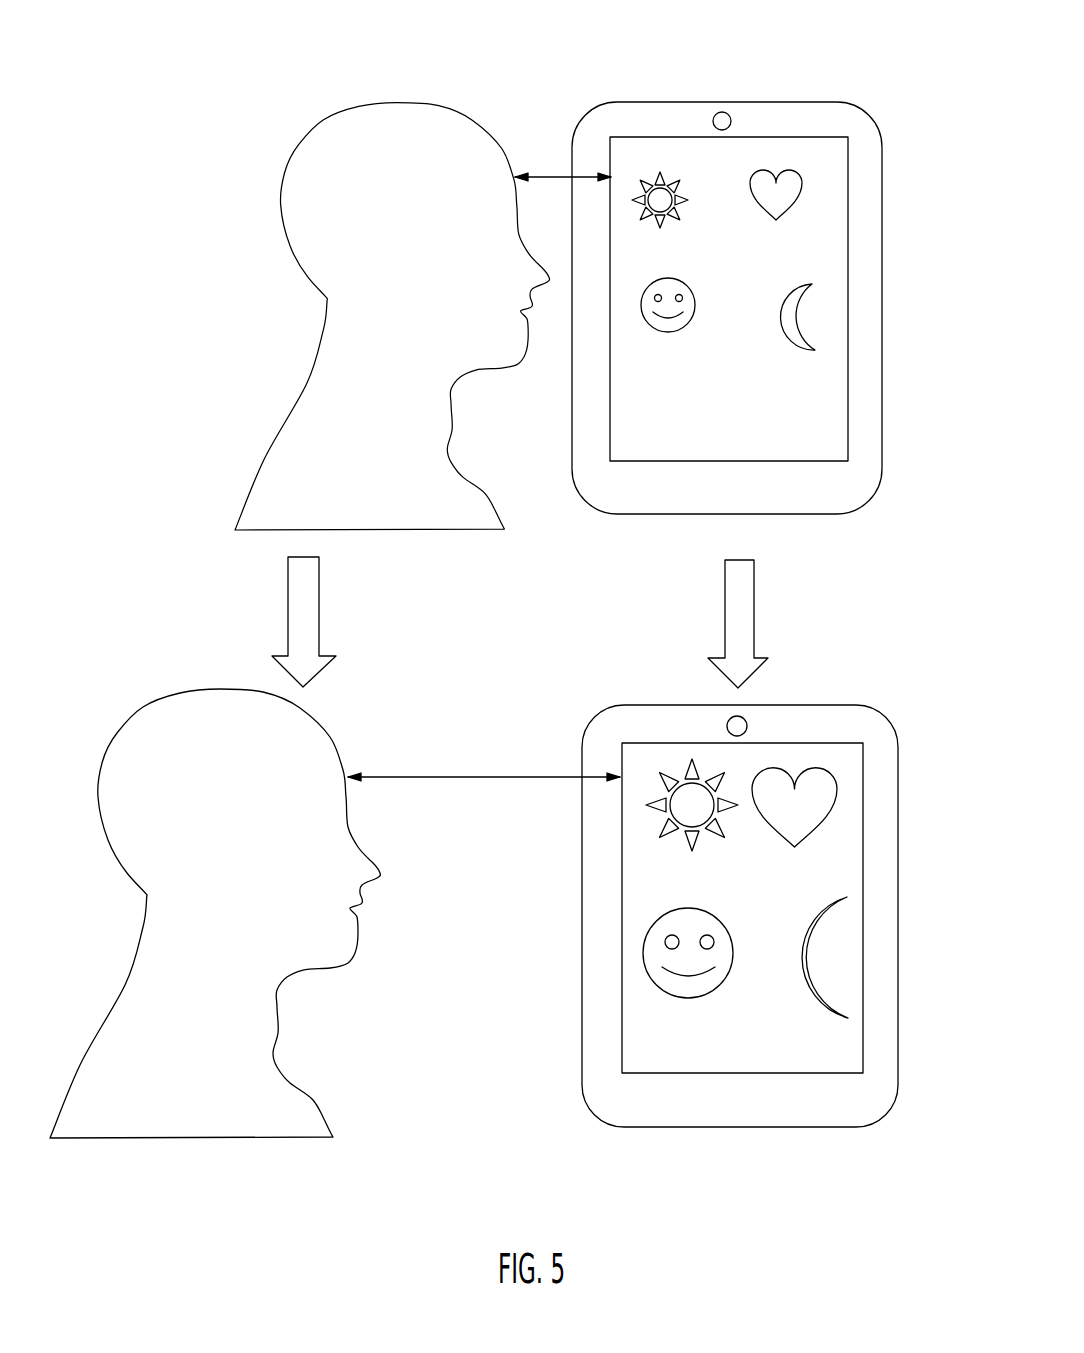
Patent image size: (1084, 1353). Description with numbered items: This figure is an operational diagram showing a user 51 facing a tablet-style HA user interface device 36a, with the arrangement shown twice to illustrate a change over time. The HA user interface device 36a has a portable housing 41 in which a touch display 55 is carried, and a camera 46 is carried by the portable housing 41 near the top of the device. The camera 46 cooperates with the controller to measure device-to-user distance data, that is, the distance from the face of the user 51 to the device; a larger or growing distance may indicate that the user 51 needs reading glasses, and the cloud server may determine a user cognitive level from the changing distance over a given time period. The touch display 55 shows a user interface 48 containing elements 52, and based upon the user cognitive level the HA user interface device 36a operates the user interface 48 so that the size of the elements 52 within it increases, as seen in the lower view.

The user 51 is at (283, 185).
The HA user interface device 36a is at (696, 612).
The portable housing 41 is at (836, 100).
The camera 46 is at (714, 114).
The touch display 55 is at (850, 153).
The user interface 48 is at (820, 242).
The elements 52 is at (767, 192).